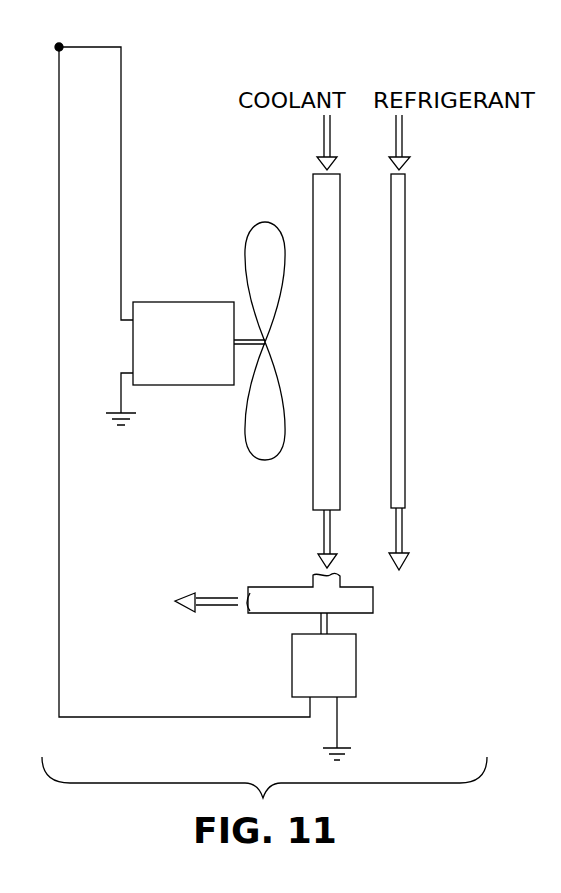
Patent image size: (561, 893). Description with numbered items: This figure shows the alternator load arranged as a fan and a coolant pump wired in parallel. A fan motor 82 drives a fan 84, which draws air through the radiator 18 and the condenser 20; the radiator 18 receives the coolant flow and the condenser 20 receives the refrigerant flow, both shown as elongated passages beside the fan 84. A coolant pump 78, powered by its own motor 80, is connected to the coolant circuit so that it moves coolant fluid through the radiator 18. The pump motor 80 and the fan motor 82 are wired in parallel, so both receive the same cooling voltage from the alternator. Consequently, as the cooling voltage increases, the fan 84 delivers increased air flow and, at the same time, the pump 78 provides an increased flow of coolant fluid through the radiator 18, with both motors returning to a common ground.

The radiator 18 is at (314, 482).
The condenser 20 is at (403, 477).
The coolant pump 78 is at (373, 600).
The coolant pump motor 80 is at (356, 670).
The fan motor 82 is at (183, 305).
The fan 84 is at (265, 232).